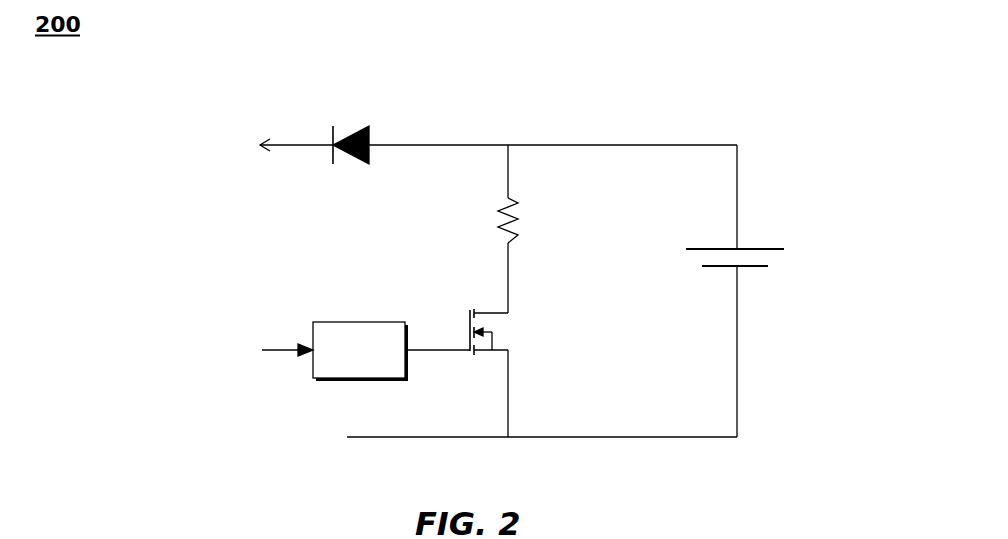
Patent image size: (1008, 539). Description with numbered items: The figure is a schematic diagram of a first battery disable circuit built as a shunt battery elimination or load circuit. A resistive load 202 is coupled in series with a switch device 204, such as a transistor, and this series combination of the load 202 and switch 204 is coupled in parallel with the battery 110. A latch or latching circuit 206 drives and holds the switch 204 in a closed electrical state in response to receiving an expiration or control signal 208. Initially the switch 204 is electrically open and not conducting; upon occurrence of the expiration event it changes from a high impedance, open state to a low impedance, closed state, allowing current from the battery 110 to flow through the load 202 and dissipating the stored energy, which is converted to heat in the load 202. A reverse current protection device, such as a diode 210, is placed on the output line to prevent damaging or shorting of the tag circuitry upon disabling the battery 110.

The diode 210 is at (363, 124).
The resistive load 202 is at (515, 216).
The switch device 204 is at (493, 340).
The latching circuit 206 is at (367, 322).
The expiration or control signal 208 is at (272, 348).
The battery 110 is at (770, 248).